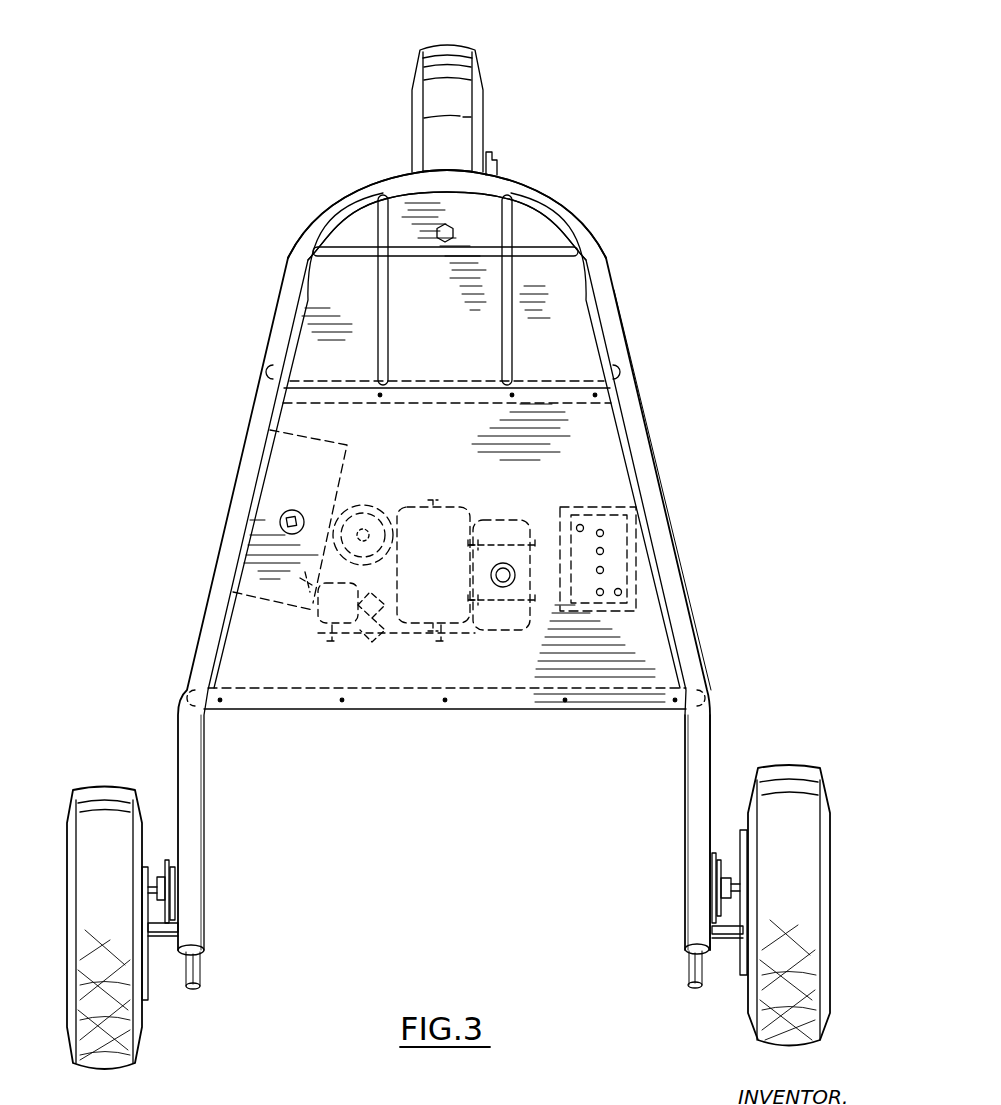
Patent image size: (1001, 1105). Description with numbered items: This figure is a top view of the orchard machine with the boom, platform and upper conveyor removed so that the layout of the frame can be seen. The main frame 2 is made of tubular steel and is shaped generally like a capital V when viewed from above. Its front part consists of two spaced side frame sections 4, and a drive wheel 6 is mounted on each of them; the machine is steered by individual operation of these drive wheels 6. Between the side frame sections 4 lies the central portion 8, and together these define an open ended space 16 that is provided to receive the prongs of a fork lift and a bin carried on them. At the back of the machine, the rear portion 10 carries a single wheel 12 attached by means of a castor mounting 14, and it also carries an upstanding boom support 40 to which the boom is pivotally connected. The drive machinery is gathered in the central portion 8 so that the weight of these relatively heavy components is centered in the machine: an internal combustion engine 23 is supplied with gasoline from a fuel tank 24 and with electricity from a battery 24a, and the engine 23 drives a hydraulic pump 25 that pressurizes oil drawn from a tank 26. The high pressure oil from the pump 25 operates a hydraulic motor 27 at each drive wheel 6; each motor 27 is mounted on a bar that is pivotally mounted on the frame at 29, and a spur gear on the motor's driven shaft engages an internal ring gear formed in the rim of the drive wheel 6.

The main frame 2 is at (688, 589).
The side frame sections 4 is at (696, 815).
The drive wheel 6 is at (107, 786).
The central portion 8 is at (258, 434).
The rear portion 10 is at (560, 214).
The single wheel 12 is at (460, 44).
The castor mounting 14 is at (495, 155).
The open ended space 16 is at (482, 763).
The internal combustion engine 23 is at (425, 508).
The fuel tank 24 is at (510, 520).
The battery 24a is at (592, 514).
The hydraulic pump 25 is at (316, 605).
The tank 26 is at (342, 467).
The hydraulic motor 27 is at (160, 893).
The pivot 29 is at (166, 866).
The boom support 40 is at (505, 326).